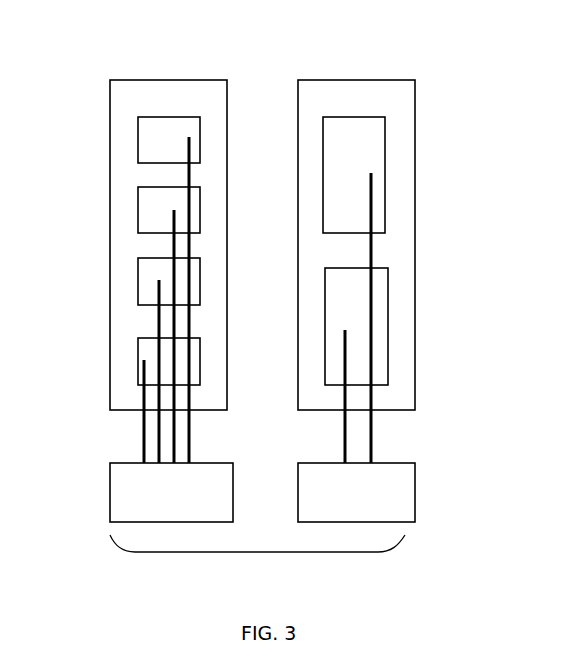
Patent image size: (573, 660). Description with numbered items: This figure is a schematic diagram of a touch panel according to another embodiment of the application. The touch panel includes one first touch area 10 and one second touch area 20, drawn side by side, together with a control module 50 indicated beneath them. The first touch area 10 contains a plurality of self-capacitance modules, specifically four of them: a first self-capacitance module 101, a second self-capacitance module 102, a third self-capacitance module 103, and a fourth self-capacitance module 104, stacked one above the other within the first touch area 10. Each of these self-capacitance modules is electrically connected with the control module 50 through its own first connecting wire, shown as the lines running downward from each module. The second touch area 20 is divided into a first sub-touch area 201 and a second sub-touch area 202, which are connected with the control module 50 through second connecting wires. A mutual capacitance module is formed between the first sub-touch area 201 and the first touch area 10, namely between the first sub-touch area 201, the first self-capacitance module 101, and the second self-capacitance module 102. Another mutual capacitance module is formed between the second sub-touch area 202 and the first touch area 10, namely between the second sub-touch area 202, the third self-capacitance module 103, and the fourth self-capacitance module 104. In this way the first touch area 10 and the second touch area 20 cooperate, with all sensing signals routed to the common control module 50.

The first touch area 10 is at (185, 97).
The first self-capacitance module 101 is at (150, 148).
The second self-capacitance module 102 is at (150, 210).
The third self-capacitance module 103 is at (150, 279).
The fourth self-capacitance module 104 is at (148, 358).
The second touch area 20 is at (350, 97).
The first sub-touch area 201 is at (385, 175).
The second sub-touch area 202 is at (388, 328).
The control module 50 is at (255, 552).